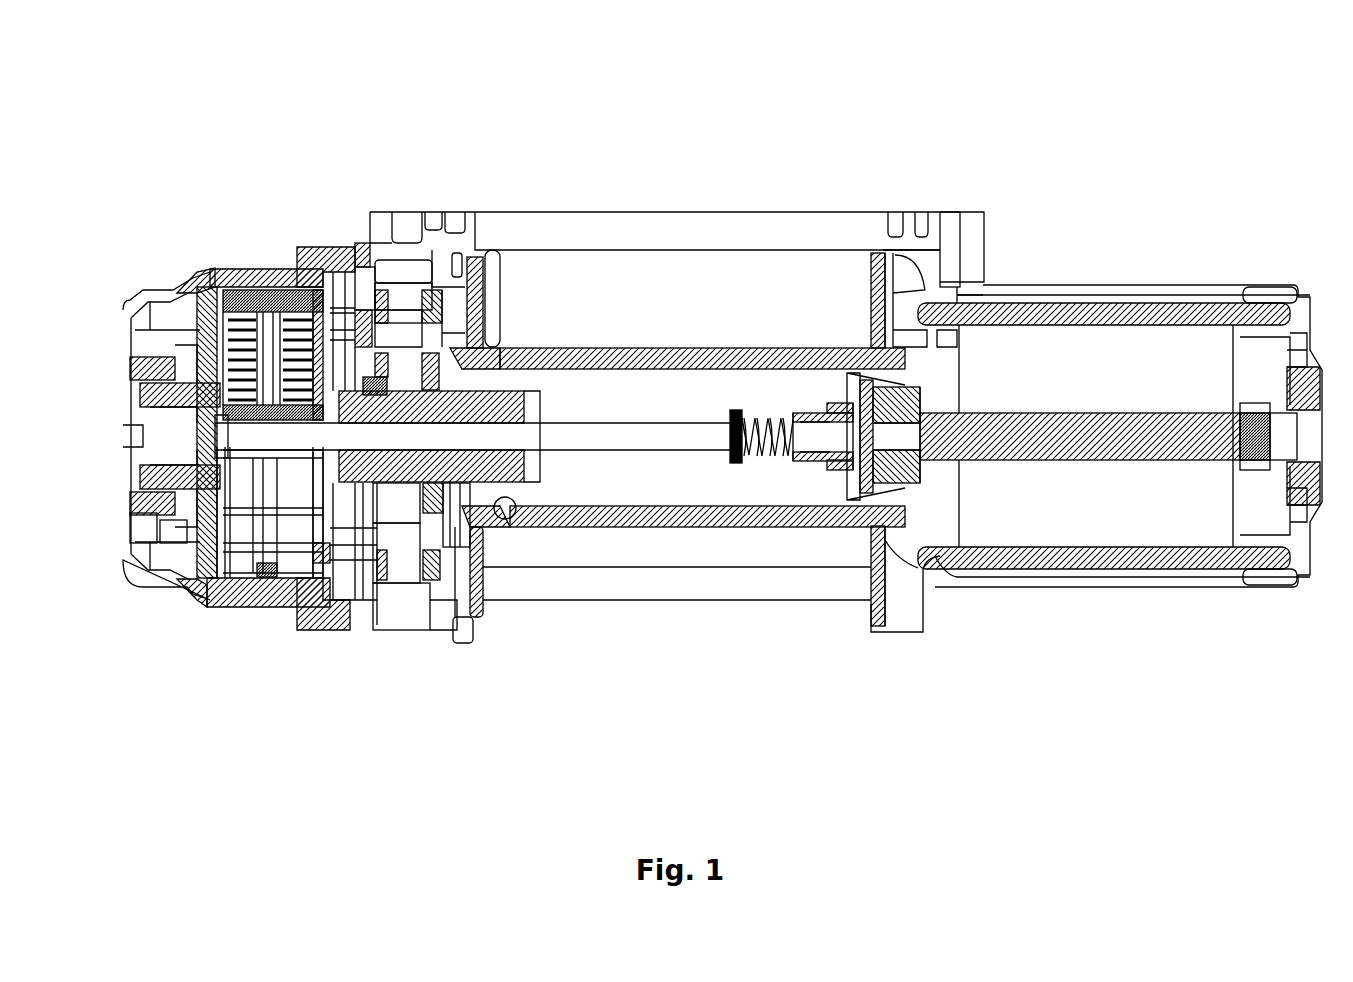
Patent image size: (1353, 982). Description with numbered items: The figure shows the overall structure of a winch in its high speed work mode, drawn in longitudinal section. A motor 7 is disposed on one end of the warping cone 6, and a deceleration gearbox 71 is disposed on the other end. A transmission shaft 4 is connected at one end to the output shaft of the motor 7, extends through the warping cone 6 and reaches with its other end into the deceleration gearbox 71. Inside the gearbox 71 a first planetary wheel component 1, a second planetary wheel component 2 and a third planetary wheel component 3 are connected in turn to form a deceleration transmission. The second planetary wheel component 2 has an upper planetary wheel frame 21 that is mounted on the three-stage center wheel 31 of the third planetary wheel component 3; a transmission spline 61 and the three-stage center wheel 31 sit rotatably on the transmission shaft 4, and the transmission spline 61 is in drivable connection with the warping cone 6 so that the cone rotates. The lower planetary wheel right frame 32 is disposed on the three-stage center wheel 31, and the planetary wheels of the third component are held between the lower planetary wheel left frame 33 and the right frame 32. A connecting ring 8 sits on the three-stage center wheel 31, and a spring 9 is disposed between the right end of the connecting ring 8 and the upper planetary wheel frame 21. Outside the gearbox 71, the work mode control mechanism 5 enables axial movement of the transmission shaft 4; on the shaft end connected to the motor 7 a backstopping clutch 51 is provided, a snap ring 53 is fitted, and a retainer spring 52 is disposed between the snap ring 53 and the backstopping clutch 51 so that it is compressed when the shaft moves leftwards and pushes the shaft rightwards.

The first planetary wheel component 1 is at (243, 250).
The second planetary wheel component 2 is at (287, 250).
The planetary wheel frame 21 is at (348, 255).
The third planetary wheel component 3 is at (422, 330).
The transmission shaft 4 is at (498, 347).
The work mode control mechanism 5 is at (130, 335).
The warping cone 6 is at (690, 230).
The motor 7 is at (1102, 300).
The deceleration gearbox 71 is at (208, 255).
The connecting ring 8 is at (375, 540).
The spring 9 is at (340, 535).
The three-stage center wheel 31 is at (410, 480).
The lower planetary wheel right frame 32 is at (400, 492).
The lower planetary wheel left frame 33 is at (445, 505).
The backstopping clutch 51 is at (840, 390).
The retainer spring 52 is at (765, 423).
The snap ring 53 is at (733, 467).
The transmission spline 61 is at (510, 520).